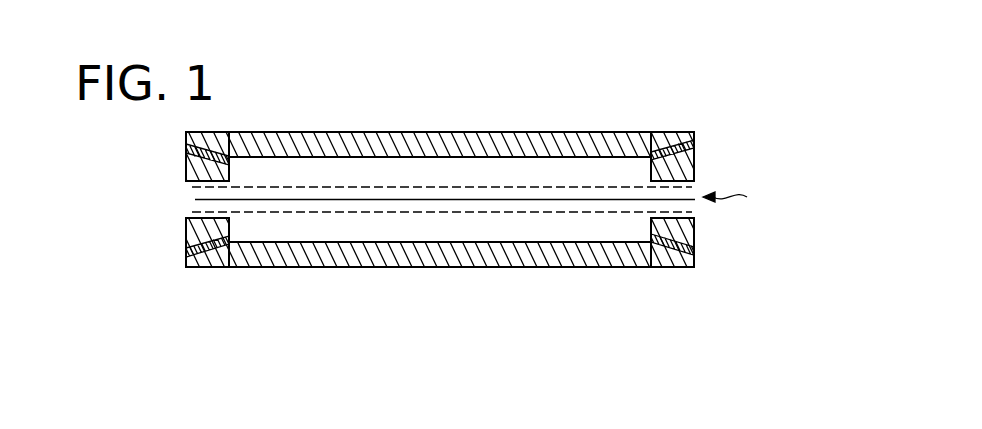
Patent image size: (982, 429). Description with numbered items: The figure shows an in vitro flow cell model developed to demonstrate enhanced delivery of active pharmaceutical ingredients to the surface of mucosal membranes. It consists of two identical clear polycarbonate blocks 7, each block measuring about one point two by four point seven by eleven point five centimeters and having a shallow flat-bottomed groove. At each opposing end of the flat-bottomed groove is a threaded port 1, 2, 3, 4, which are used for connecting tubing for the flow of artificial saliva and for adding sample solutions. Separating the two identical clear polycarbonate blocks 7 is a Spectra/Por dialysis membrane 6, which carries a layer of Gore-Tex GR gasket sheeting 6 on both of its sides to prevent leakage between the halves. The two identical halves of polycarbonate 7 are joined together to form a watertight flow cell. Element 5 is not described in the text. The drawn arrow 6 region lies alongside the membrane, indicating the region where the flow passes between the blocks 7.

The port 1 is at (186, 150).
The port 2 is at (694, 145).
The port 3 is at (186, 255).
The port 4 is at (694, 245).
The sheet member 5 is at (192, 212).
The dialysis membrane 6 is at (735, 204).
The clear polycarbonate block 7 is at (694, 131).